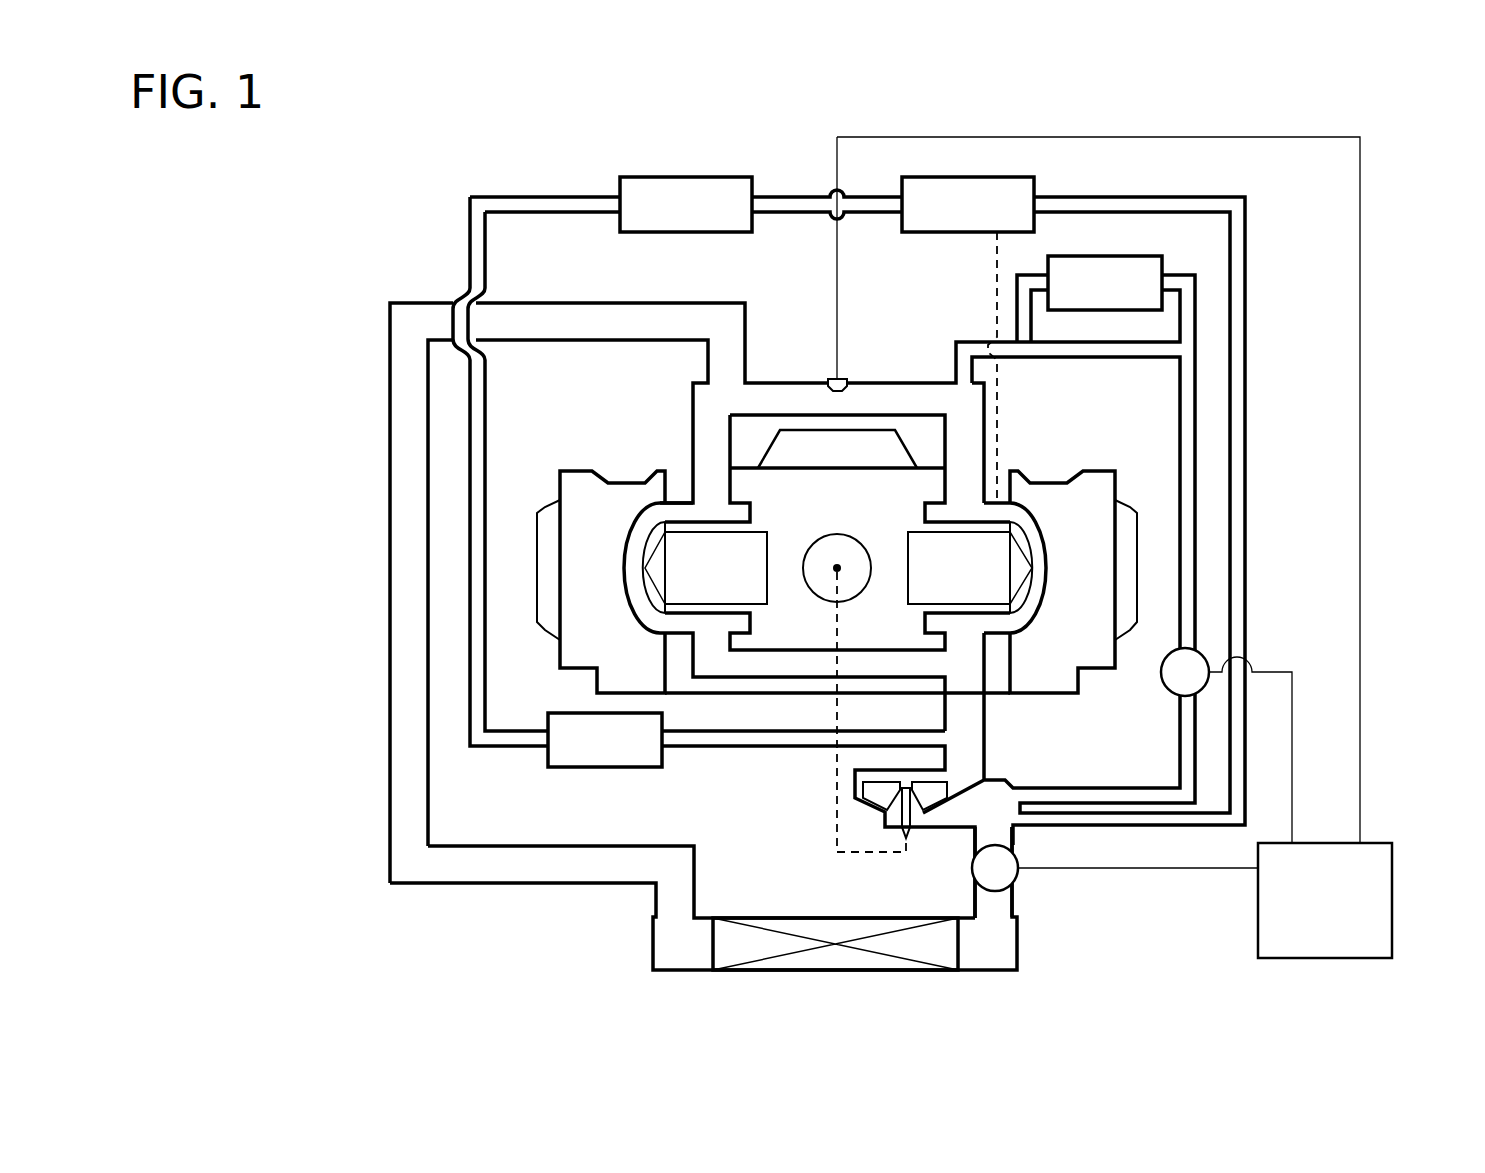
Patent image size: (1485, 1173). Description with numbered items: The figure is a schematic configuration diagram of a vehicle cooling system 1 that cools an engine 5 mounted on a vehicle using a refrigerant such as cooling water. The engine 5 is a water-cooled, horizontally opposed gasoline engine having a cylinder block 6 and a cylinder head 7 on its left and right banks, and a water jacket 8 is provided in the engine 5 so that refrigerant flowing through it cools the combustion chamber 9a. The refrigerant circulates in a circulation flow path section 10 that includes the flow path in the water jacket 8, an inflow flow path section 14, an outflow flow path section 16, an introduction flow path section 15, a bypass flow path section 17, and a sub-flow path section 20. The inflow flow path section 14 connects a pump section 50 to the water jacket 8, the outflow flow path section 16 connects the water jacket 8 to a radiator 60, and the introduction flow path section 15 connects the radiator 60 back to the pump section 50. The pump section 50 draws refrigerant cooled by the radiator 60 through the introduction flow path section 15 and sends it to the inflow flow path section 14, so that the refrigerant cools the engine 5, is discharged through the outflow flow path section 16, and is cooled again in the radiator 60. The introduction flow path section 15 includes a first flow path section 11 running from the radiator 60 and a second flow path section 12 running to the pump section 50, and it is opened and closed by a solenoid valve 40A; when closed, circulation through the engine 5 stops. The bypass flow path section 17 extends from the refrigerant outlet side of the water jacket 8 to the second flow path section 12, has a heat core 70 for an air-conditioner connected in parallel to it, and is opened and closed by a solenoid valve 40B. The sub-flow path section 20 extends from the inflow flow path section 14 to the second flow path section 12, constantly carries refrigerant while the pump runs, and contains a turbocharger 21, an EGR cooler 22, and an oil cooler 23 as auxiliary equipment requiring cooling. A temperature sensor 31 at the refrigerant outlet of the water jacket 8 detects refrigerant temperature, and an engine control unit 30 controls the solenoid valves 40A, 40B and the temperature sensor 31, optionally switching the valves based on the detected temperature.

The vehicle cooling system 1 is at (362, 213).
The engine 5 is at (616, 413).
The cylinder block 6 is at (682, 468).
The cylinder head 7 is at (560, 470).
The water jacket 8 is at (632, 563).
The combustion chamber 9a is at (648, 563).
The circulation flow path section 10 is at (465, 902).
The first flow path section 11 is at (1015, 900).
The second flow path section 12 is at (1015, 840).
The inflow flow path section 14 is at (986, 762).
The introduction flow path section 15 is at (1032, 945).
The outflow flow path section 16 is at (390, 590).
The bypass flow path section 17 is at (1110, 362).
The sub-flow path section 20 is at (1248, 348).
The turbocharger 21 is at (598, 770).
The EGR cooler 22 is at (690, 233).
The oil cooler 23 is at (970, 233).
The engine control unit 30 is at (1385, 843).
The temperature sensor 31 is at (830, 378).
The solenoid valve 40A is at (1020, 875).
The solenoid valve 40B is at (1170, 692).
The pump section 50 is at (912, 828).
The radiator 60 is at (835, 916).
The heat core 70 is at (1140, 257).